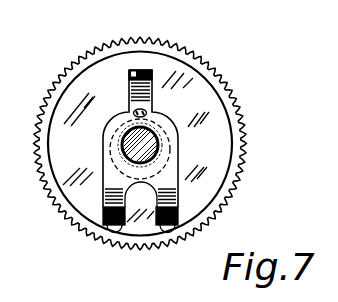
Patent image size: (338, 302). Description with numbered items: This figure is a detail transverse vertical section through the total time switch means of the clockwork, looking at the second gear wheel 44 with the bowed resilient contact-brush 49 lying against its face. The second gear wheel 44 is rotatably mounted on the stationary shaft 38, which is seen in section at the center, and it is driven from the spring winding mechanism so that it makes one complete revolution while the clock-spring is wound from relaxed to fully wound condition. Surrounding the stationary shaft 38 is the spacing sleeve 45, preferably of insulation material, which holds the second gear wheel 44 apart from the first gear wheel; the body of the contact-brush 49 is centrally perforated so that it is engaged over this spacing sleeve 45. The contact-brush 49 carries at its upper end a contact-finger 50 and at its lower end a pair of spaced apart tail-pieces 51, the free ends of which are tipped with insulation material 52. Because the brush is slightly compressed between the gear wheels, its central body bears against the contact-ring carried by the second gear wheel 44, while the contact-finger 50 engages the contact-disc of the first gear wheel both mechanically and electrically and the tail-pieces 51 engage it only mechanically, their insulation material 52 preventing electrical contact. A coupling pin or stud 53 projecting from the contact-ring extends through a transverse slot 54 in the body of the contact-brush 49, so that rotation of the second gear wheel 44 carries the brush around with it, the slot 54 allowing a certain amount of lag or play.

The stationary shaft 38 is at (122, 148).
The second gear wheel 44 is at (173, 77).
The spacing sleeve 45 is at (122, 130).
The contact-brush 49 is at (178, 143).
The contact-finger 50 is at (152, 74).
The tail-pieces 51 is at (103, 196).
The insulation material 52 is at (143, 213).
The coupling pin or stud 53 is at (152, 111).
The transverse slot 54 is at (129, 108).